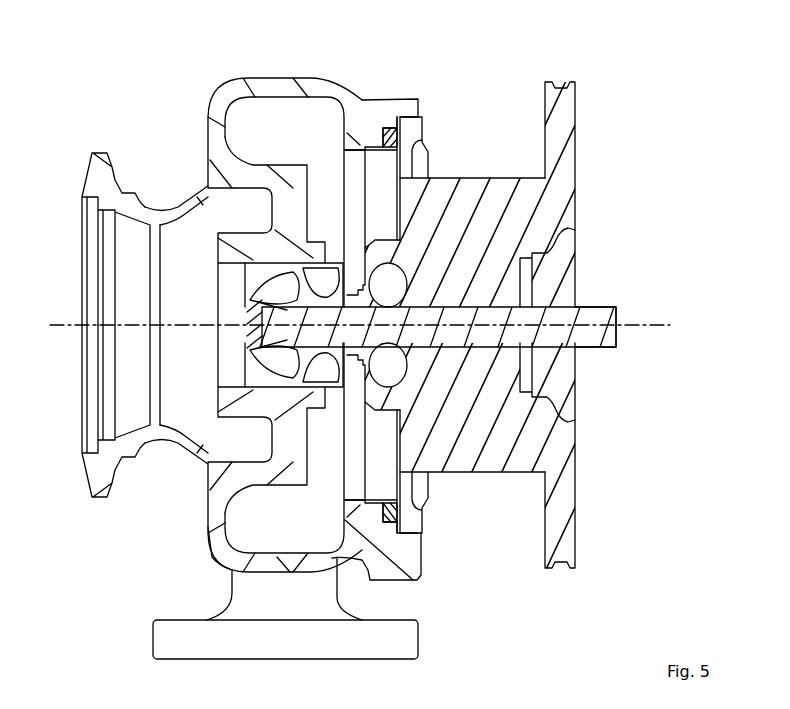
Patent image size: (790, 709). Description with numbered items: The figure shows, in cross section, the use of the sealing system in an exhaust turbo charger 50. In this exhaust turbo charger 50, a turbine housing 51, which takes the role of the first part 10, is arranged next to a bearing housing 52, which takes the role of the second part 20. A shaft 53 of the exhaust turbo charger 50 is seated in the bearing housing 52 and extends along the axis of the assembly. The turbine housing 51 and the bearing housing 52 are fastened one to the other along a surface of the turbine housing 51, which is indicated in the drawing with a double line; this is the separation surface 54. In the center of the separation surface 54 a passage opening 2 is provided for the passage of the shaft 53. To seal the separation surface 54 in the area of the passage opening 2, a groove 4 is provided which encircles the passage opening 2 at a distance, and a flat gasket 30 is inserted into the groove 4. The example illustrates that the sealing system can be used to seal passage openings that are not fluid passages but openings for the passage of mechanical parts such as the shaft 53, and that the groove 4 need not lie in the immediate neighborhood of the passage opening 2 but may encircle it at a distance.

The passage opening 2 is at (438, 327).
The groove 4 is at (380, 132).
The first part 10 is at (90, 467).
The second part 20 is at (603, 437).
The flat gasket 30 is at (396, 512).
The exhaust turbo charger 50 is at (454, 325).
The turbine housing 51 is at (195, 450).
The bearing housing 52 is at (487, 460).
The shaft 53 is at (598, 348).
The separation surface 54 is at (408, 112).